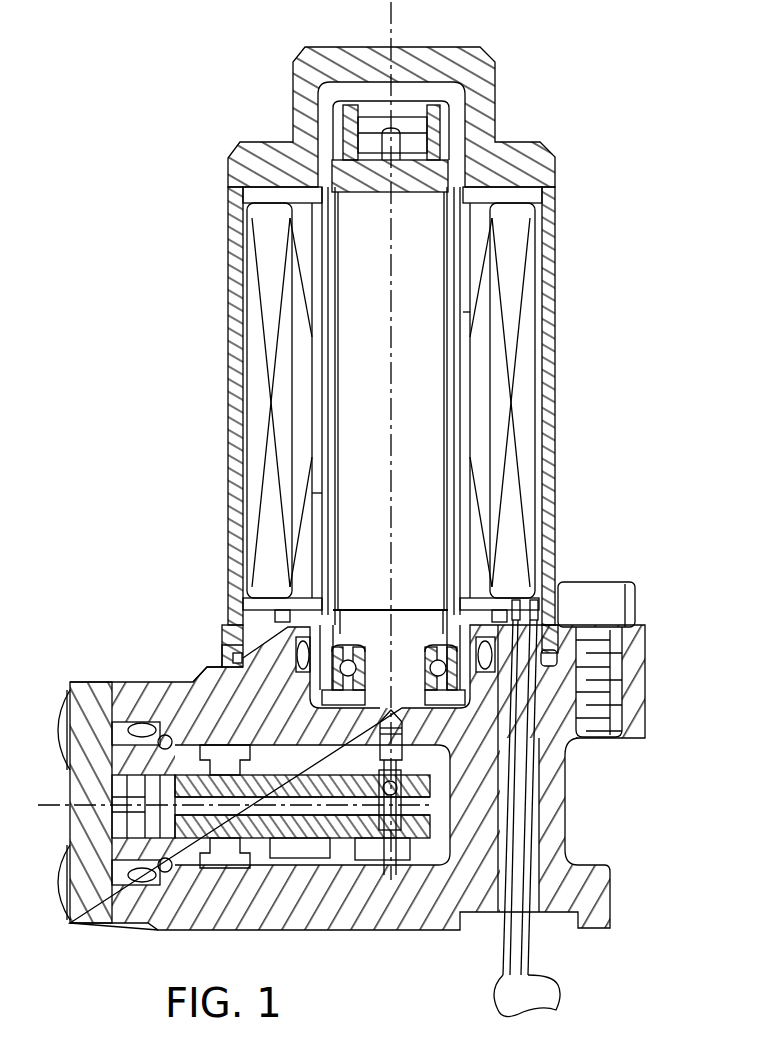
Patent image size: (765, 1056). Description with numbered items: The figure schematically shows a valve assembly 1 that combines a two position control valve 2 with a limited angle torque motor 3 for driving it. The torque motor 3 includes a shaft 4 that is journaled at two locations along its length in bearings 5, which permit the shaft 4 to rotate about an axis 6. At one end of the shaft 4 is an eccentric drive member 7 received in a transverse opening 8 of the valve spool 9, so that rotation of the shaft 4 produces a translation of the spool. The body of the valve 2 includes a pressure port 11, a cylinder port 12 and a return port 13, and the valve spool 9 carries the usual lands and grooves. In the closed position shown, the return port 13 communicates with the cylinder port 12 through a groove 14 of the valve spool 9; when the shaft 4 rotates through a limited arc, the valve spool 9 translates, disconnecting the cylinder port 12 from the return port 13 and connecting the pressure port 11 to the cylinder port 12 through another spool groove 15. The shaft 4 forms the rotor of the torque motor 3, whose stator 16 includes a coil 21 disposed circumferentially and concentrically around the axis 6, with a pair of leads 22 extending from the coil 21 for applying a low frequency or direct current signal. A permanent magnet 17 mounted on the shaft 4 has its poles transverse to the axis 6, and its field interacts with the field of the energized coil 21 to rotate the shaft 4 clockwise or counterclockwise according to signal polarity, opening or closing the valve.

The valve assembly 1 is at (585, 524).
The two position control valve 2 is at (133, 672).
The limited angle torque motor 3 is at (567, 198).
The shaft 4 is at (440, 165).
The bearings 5 is at (372, 135).
The axis 6 is at (394, 34).
The eccentric drive member 7 is at (403, 787).
The transverse opening 8 is at (312, 782).
The valve spool 9 is at (142, 803).
The pressure port 11 is at (152, 930).
The cylinder port 12 is at (300, 845).
The return port 13 is at (372, 858).
The groove 14 is at (320, 740).
The spool groove 15 is at (197, 740).
The stator 16 is at (567, 302).
The permanent magnet 17 is at (353, 357).
The coil 21 is at (520, 407).
The leads 22 is at (558, 1008).